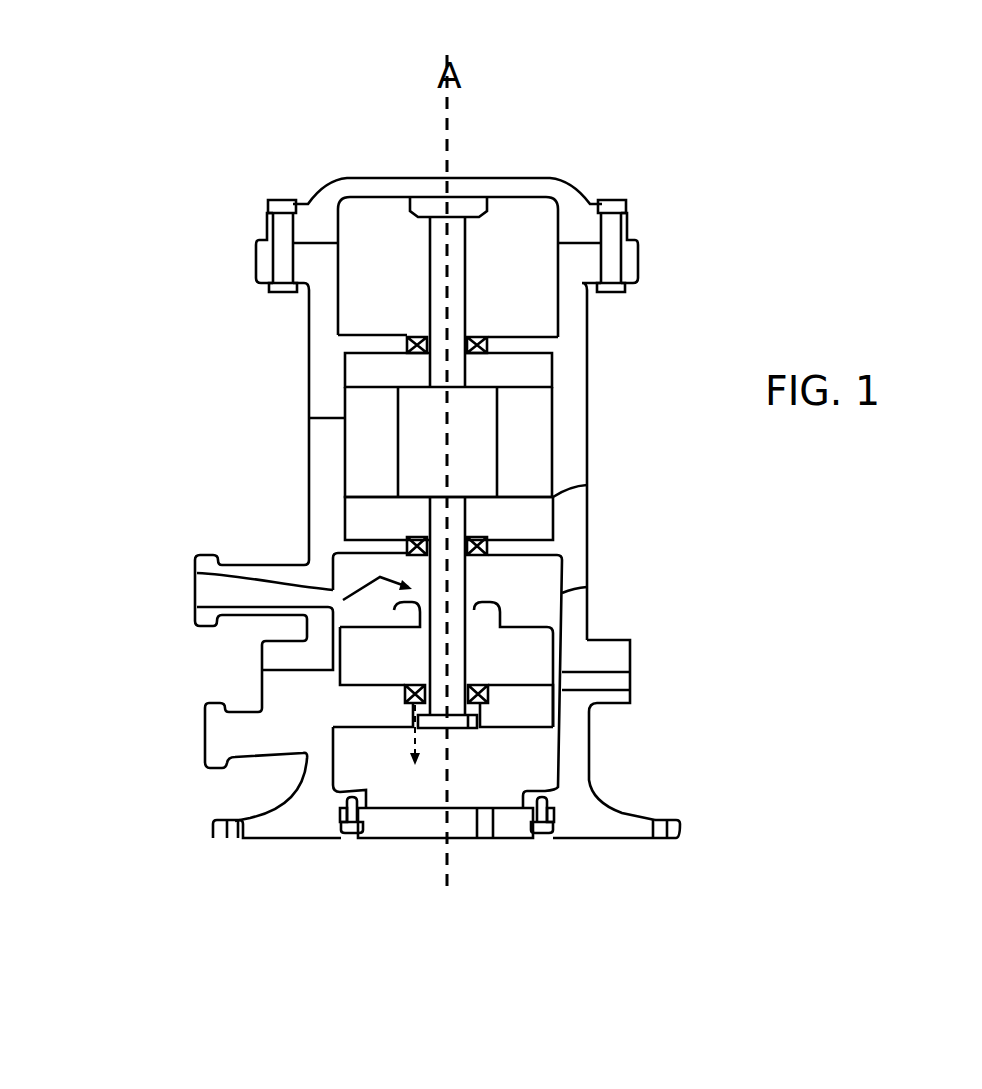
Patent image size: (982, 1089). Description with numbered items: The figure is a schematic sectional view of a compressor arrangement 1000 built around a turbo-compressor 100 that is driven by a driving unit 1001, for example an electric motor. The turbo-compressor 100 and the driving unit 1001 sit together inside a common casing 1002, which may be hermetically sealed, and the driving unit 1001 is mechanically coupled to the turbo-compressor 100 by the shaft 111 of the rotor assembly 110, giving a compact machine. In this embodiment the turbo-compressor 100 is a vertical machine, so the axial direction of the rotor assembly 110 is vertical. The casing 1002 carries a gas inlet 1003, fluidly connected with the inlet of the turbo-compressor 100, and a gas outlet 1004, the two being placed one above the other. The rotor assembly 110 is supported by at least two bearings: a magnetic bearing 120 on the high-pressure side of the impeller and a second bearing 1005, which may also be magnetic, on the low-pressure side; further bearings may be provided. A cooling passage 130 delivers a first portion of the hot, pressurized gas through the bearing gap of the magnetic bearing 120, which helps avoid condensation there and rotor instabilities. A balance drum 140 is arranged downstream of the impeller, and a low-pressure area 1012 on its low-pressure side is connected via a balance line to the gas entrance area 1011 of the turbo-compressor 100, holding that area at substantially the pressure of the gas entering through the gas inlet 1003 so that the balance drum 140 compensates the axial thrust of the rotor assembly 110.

The compressor arrangement 1000 is at (286, 106).
The casing 1002 is at (321, 343).
The driving unit 1001 is at (432, 440).
The second bearing 1005 is at (497, 540).
The rotor assembly 110 is at (452, 692).
The turbo-compressor 100 is at (375, 610).
The shaft 111 is at (540, 573).
The gas entrance area 1011 is at (457, 590).
The magnetic bearing 120 is at (493, 697).
The balance drum 140 is at (472, 726).
The gas inlet 1003 is at (170, 588).
The gas outlet 1004 is at (190, 742).
The cooling passage 130 is at (413, 737).
The low-pressure area 1012 is at (510, 783).